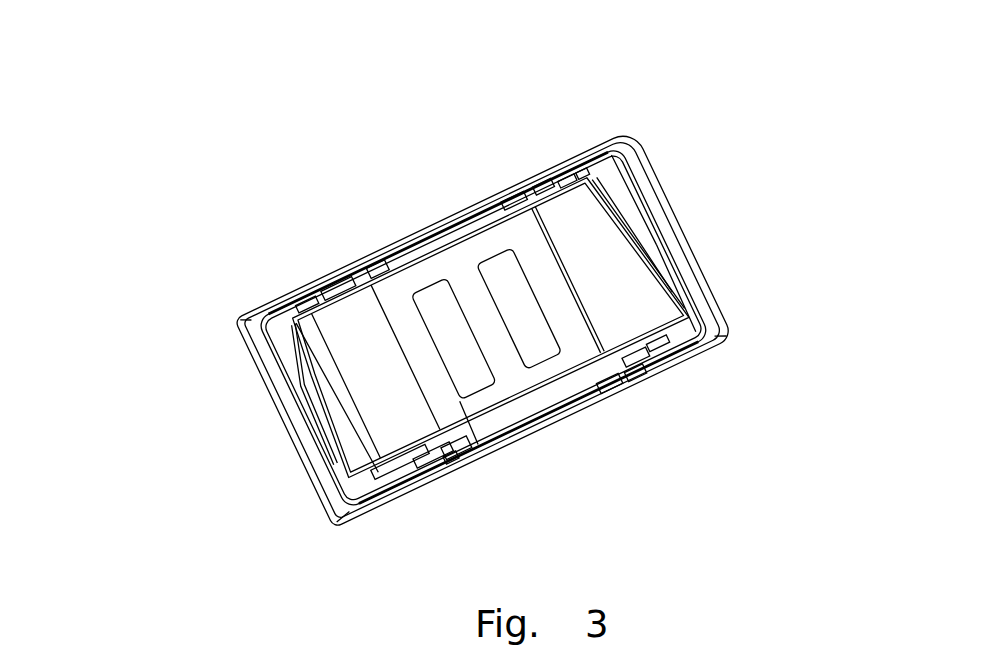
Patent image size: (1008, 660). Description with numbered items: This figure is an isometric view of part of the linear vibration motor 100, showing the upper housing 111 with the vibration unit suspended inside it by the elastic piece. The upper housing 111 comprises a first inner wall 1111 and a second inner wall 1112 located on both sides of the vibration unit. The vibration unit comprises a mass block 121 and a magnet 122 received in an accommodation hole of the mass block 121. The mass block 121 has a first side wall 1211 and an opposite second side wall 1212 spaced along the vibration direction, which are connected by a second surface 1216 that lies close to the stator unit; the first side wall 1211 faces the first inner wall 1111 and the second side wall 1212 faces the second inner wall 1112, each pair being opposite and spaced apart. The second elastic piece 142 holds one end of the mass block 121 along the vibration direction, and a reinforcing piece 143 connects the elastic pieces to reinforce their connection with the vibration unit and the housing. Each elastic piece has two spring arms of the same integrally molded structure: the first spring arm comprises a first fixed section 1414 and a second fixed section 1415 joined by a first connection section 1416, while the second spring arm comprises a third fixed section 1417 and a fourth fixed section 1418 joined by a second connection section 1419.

The linear vibration motor 100 is at (451, 52).
The upper housing 111 is at (457, 203).
The first inner wall 1111 is at (425, 223).
The second inner wall 1112 is at (503, 427).
The mass block 121 is at (492, 470).
The magnet 122 is at (532, 356).
The first side wall 1211 is at (330, 268).
The second side wall 1212 is at (424, 400).
The second surface 1216 is at (412, 272).
The second elastic piece 142 is at (290, 411).
The reinforcing piece 143 is at (624, 385).
The first fixed section 1414 is at (577, 177).
The second fixed section 1415 is at (677, 357).
The first connection section 1416 is at (672, 283).
The third fixed section 1417 is at (650, 360).
The fourth fixed section 1418 is at (600, 150).
The second connection section 1419 is at (650, 228).